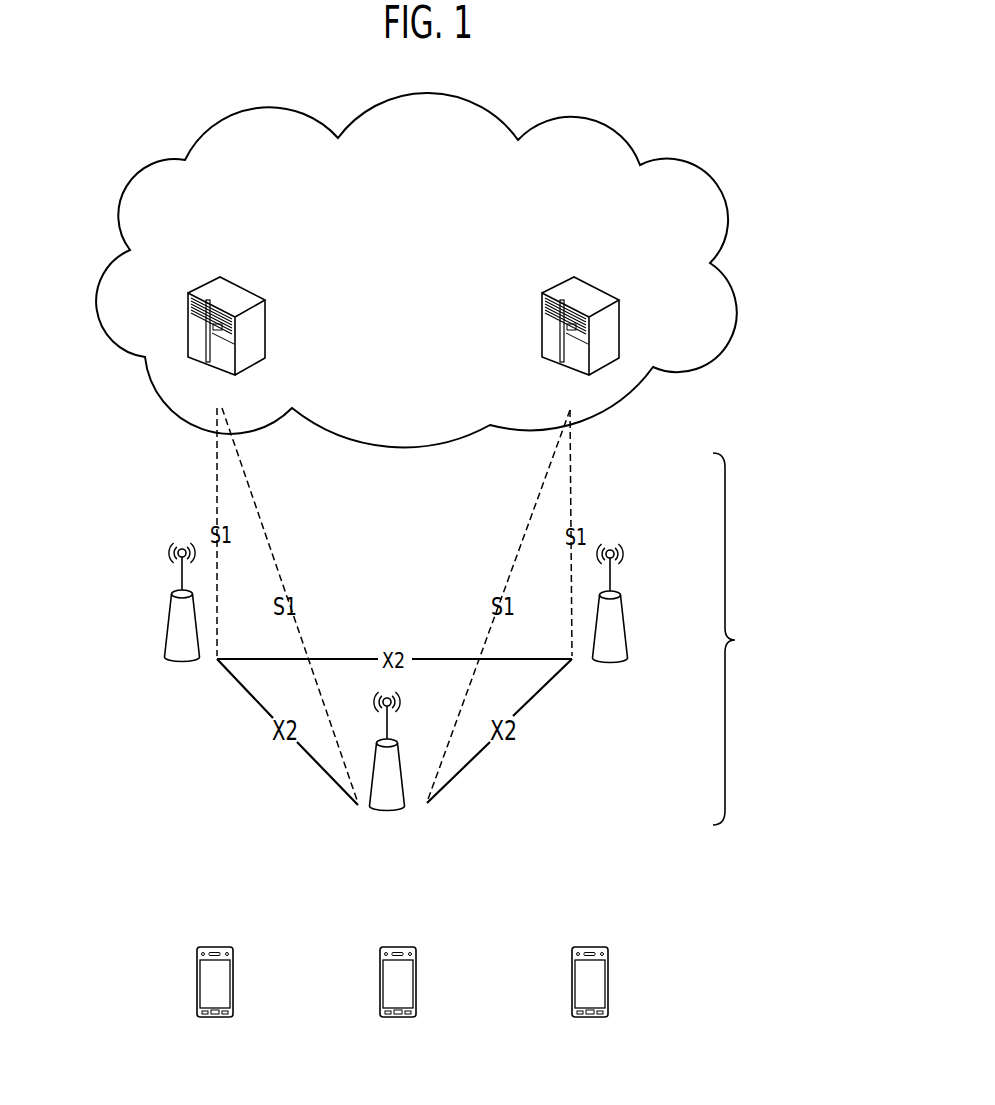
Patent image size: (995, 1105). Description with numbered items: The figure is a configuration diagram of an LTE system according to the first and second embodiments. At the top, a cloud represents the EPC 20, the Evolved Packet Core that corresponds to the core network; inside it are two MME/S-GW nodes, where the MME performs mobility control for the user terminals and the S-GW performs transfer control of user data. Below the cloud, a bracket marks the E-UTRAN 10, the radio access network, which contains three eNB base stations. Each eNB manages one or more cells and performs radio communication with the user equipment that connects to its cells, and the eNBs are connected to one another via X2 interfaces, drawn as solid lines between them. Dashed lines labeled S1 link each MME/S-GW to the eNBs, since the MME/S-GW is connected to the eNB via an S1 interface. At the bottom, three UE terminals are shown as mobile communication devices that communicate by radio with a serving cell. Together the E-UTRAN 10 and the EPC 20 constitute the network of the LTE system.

The EPC 20 is at (618, 131).
The E-UTRAN 10 is at (773, 639).